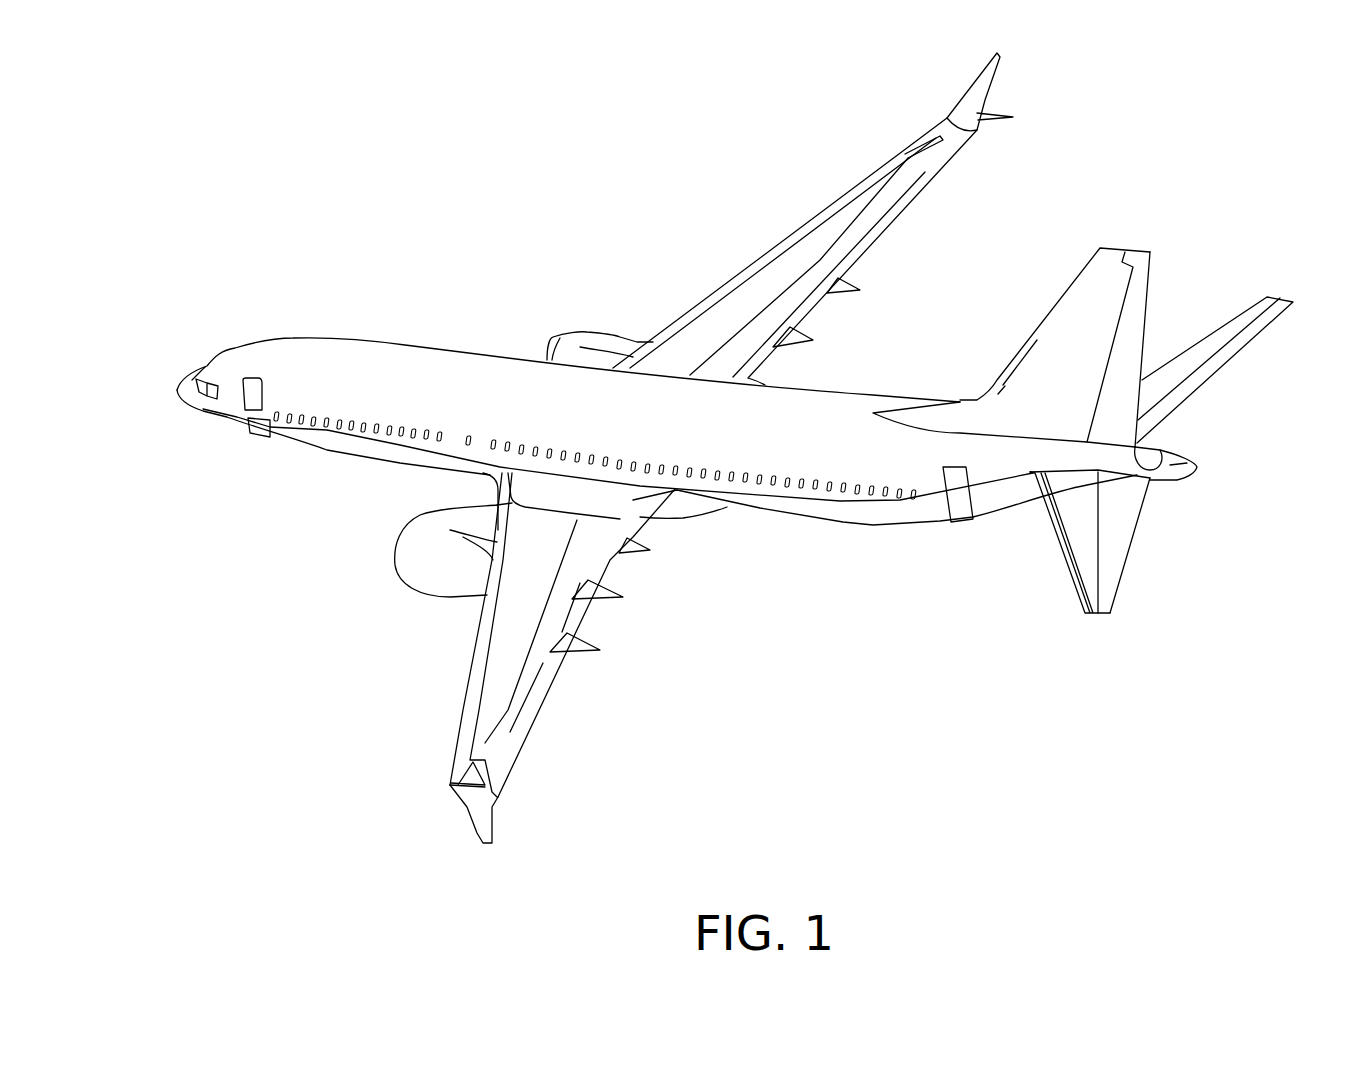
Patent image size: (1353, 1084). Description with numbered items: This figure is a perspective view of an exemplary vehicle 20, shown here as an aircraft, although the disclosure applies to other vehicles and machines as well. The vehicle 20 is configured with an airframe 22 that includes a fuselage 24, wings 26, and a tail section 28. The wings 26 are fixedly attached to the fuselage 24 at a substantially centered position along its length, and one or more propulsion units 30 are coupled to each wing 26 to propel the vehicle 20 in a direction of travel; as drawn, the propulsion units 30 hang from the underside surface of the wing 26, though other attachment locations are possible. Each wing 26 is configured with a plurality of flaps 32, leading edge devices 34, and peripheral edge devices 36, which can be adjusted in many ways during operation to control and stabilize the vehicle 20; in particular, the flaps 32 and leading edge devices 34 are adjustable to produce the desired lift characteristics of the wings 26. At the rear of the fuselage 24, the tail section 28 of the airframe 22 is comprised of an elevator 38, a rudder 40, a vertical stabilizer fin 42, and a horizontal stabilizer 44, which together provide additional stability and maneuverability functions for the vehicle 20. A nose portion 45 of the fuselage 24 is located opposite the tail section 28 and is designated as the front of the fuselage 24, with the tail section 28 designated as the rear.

The vehicle 20 is at (340, 187).
The airframe 22 is at (297, 547).
The fuselage 24 is at (355, 340).
The wings 26 is at (785, 275).
The tail section 28 is at (1170, 220).
The propulsion unit 30 is at (605, 342).
The flaps 32 is at (573, 608).
The leading edge devices 34 is at (835, 205).
The peripheral edge devices 36 is at (967, 102).
The elevator 38 is at (1113, 557).
The rudder 40 is at (1130, 342).
The vertical stabilizer fin 42 is at (1075, 327).
The horizontal stabilizer 44 is at (1083, 557).
The nose portion 45 is at (188, 393).